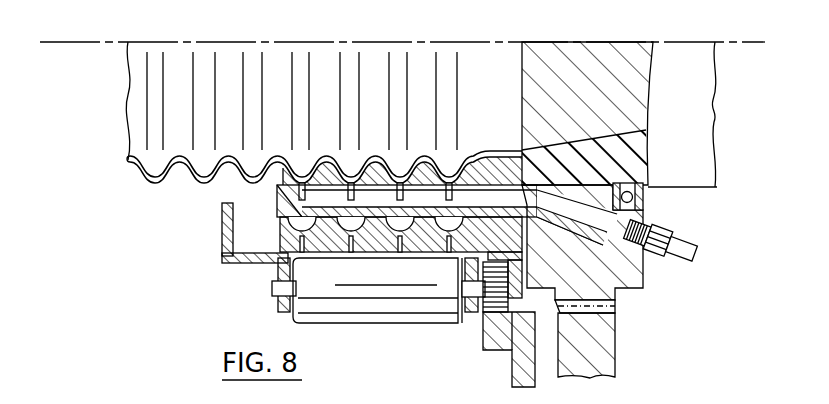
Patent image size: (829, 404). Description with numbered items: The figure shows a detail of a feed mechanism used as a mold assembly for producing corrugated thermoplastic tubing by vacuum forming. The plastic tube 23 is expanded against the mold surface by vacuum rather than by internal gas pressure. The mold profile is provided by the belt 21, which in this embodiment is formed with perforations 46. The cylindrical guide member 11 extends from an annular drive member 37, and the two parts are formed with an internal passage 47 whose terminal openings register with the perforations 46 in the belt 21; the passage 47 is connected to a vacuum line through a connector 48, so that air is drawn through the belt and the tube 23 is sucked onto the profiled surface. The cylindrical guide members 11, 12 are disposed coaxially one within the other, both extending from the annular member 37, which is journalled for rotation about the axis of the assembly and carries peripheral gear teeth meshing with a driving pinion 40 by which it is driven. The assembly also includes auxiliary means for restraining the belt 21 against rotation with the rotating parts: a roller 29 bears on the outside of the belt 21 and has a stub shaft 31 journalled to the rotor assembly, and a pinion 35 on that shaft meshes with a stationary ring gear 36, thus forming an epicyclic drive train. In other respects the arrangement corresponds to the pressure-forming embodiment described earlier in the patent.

The inner cylindrical guide member 11 is at (277, 203).
The outer cylindrical guide member 12 is at (223, 244).
The belt 21 is at (344, 256).
The plastic tube 23 is at (152, 178).
The roller 29 is at (398, 310).
The stub shaft 31 is at (272, 290).
The pinion 35 is at (488, 312).
The stationary ring gear 36 is at (500, 340).
The annular drive member 37 is at (625, 290).
The driving pinion 40 is at (603, 353).
The perforations 46 is at (296, 160).
The internal passage 47 is at (642, 256).
The connector 48 is at (672, 223).